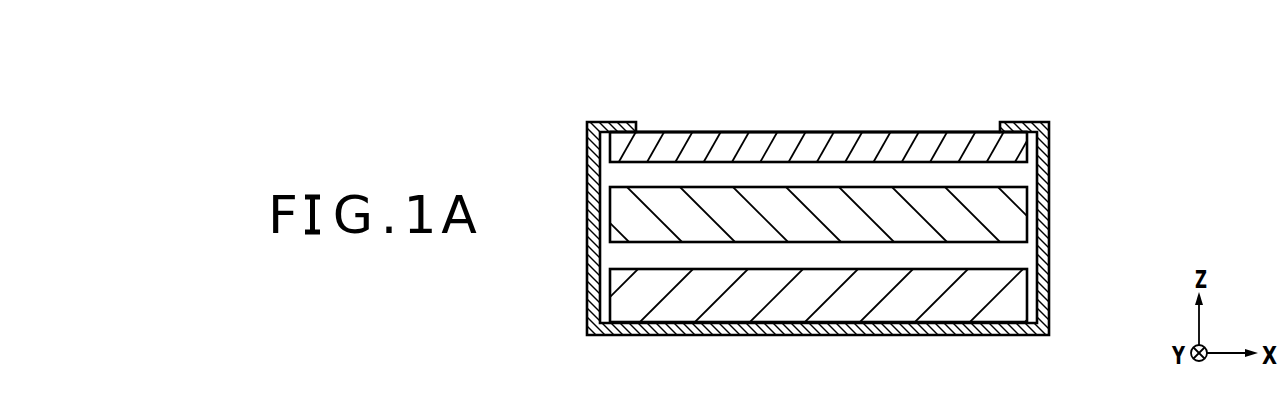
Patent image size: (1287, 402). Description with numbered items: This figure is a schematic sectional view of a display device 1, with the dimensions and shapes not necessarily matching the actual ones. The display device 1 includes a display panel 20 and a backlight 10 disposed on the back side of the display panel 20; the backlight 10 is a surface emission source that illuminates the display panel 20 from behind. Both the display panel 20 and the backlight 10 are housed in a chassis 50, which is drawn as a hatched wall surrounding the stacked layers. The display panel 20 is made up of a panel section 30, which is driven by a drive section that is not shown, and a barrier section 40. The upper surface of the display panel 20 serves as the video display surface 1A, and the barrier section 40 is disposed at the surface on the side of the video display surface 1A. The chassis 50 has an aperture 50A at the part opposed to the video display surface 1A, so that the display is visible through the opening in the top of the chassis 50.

The display device 1 is at (1078, 91).
The video display surface 1A is at (838, 131).
The backlight 10 is at (1013, 298).
The display panel 20 is at (1116, 130).
The panel section 30 is at (1013, 217).
The barrier section 40 is at (1013, 142).
The chassis 50 is at (602, 122).
The aperture 50A is at (648, 127).